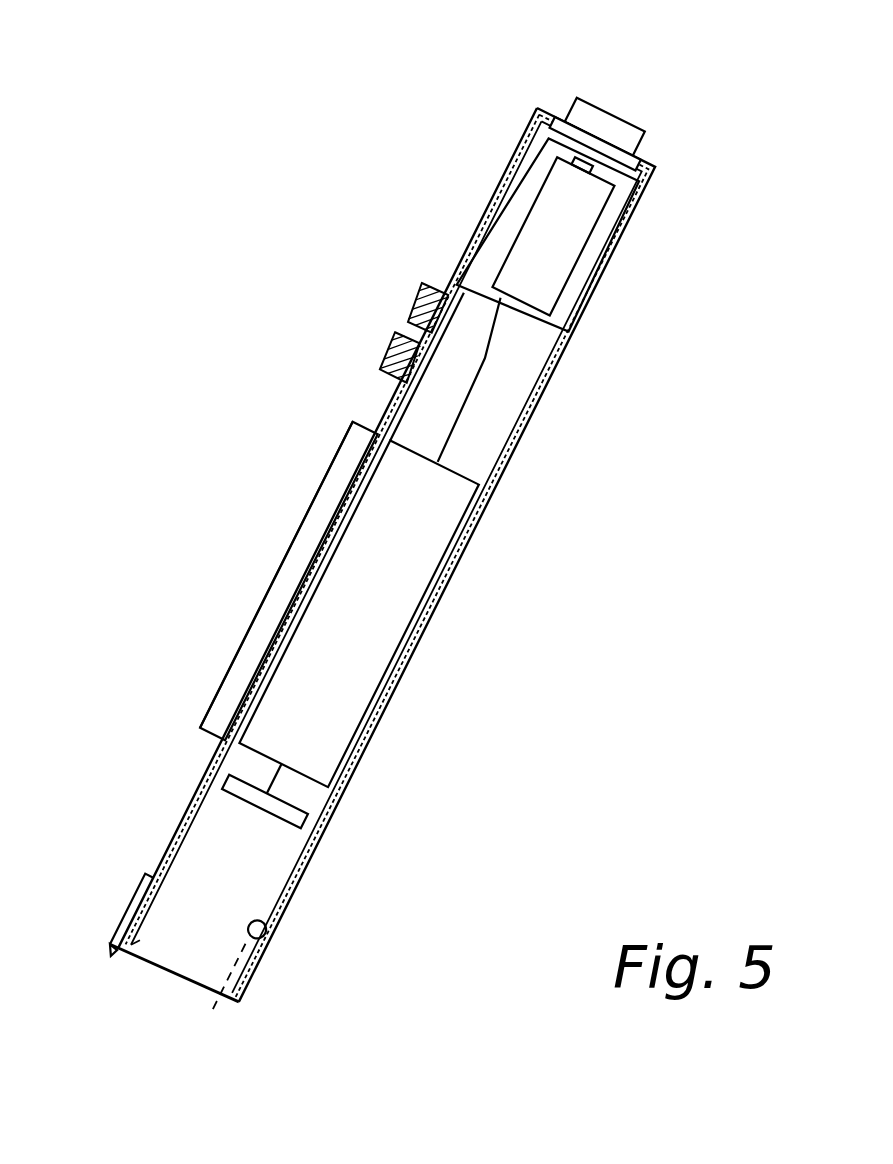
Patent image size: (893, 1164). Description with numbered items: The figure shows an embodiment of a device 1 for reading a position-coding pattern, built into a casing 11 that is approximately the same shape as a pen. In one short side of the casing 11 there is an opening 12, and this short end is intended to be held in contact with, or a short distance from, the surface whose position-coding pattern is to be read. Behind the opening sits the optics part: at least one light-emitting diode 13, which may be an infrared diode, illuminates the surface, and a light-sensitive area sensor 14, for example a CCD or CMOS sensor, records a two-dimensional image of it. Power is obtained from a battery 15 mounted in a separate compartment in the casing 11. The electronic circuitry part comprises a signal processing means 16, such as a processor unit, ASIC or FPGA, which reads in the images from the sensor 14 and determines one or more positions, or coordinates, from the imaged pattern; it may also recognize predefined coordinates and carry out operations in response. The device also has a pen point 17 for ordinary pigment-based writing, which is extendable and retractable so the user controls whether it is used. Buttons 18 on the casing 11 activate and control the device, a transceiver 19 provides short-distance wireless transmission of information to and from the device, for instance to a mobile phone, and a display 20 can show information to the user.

The test strip / plate 1 is at (336, 528).
The casing 11 is at (487, 512).
The opening 12 is at (168, 972).
The light-emitting diode 13 is at (265, 938).
The light-sensitive area sensor 14 is at (300, 806).
The battery 15 is at (550, 247).
The signal processing means 16 is at (358, 645).
The pen point 17 is at (140, 895).
The buttons 18 is at (388, 352).
The transceiver 19 is at (606, 117).
The display 20 is at (255, 647).